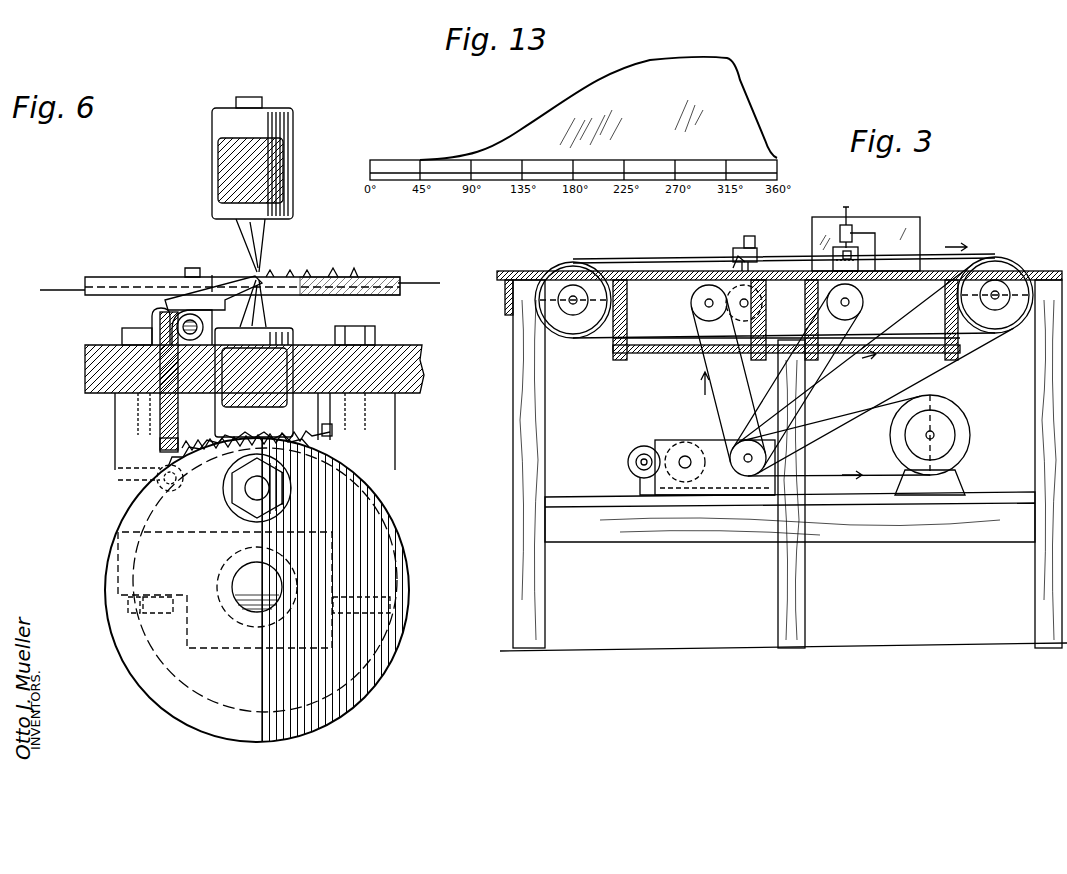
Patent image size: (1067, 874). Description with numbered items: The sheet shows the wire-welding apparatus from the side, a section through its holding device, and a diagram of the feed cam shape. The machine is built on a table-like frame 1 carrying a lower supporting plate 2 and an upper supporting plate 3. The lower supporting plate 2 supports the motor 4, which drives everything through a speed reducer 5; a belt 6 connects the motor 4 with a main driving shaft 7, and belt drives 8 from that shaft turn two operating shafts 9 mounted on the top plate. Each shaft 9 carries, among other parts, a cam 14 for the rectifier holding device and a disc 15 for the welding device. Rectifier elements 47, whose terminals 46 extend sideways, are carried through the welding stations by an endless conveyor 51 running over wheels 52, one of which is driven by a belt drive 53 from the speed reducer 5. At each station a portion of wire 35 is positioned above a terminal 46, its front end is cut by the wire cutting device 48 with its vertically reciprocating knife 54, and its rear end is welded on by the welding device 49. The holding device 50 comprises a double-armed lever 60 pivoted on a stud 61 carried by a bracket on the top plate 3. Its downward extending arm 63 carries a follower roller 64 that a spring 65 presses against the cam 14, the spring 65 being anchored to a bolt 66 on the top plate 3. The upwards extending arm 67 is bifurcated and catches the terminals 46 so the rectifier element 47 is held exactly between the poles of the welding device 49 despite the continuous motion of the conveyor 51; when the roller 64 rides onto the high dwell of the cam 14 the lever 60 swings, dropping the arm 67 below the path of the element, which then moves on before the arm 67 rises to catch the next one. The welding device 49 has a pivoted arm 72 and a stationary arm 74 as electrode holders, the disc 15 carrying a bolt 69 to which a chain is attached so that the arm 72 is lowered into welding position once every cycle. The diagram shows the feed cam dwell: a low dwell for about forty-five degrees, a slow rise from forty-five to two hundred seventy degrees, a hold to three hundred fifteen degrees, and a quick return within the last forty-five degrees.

In FIG. 3, the table-like frame 1 is at (522, 453).
In FIG. 3, the lower supporting plate 2 is at (584, 500).
In FIG. 6, the upper supporting plate 3 is at (422, 380).
In FIG. 3, the upper supporting plate 3 is at (515, 283).
In FIG. 3, the motor 4 is at (972, 436).
In FIG. 3, the speed reducer 5 is at (668, 452).
In FIG. 3, the belt 6 is at (893, 427).
In FIG. 3, the main driving shaft 7 is at (790, 466).
In FIG. 3, the belt drives 8 is at (706, 360).
In FIG. 6, the operating shafts 9 is at (242, 582).
In FIG. 3, the operating shafts 9 is at (708, 304).
In FIG. 6, the cam 14 is at (186, 684).
In FIG. 6, the disc 15 is at (112, 637).
In FIG. 6, the wire 35 is at (333, 270).
In FIG. 6, the terminals 46 is at (222, 285).
In FIG. 6, the rectifier element 47 is at (298, 272).
In FIG. 3, the wire cutting device 48 is at (867, 255).
In FIG. 6, the welding device 49 is at (212, 104).
In FIG. 3, the welding device 49 is at (861, 225).
In FIG. 6, the holding device 50 is at (198, 264).
In FIG. 6, the endless conveyor 51 is at (58, 290).
In FIG. 3, the endless conveyor 51 is at (680, 268).
In FIG. 3, the wheels 52 is at (577, 272).
In FIG. 3, the belt drive 53 is at (905, 380).
In FIG. 3, the knife 54 is at (1001, 268).
In FIG. 6, the double-armed lever 60 is at (152, 312).
In FIG. 3, the double-armed lever 60 is at (730, 268).
In FIG. 6, the stud 61 is at (196, 325).
In FIG. 6, the downward extending arm 63 is at (160, 442).
In FIG. 6, the follower roller 64 is at (152, 470).
In FIG. 6, the spring 65 is at (212, 440).
In FIG. 6, the bolt 66 is at (334, 432).
In FIG. 6, the upwards extending arm 67 is at (212, 275).
In FIG. 3, the upwards extending arm 67 is at (746, 255).
In FIG. 6, the bolt 69 is at (248, 489).
In FIG. 6, the pivoted arm 72 is at (282, 170).
In FIG. 3, the pivoted arm 72 is at (838, 238).
In FIG. 6, the stationary arm 74 is at (296, 345).